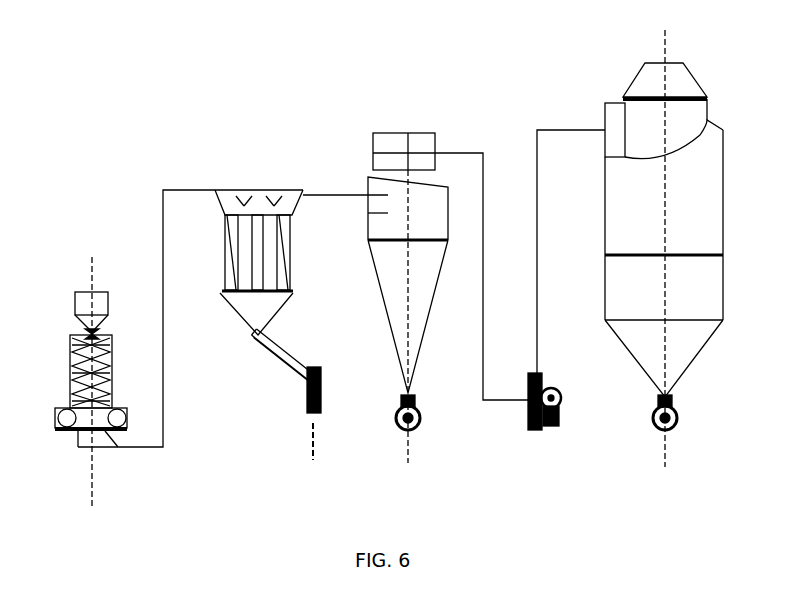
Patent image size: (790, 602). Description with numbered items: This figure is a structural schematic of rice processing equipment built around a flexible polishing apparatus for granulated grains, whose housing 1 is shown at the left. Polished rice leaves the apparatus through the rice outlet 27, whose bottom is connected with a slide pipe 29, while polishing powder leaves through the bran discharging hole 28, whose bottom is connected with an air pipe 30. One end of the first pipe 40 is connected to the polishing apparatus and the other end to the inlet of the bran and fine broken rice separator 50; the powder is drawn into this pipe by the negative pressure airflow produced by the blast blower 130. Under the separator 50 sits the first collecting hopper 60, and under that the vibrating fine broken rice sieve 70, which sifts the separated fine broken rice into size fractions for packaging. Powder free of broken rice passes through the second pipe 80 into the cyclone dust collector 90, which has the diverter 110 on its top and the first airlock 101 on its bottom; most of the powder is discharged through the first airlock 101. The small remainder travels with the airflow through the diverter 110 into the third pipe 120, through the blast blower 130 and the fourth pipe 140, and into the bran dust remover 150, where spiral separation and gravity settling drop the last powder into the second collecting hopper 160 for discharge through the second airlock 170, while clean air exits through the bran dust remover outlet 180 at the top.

The housing 1 is at (75, 338).
The rice outlet 27 is at (78, 390).
The bran discharging hole 28 is at (75, 423).
The air pipe 30 is at (92, 445).
The slide pipe 29 is at (90, 457).
The first pipe 40 is at (160, 267).
The bran and fine broken rice separator 50 is at (220, 190).
The first collecting hopper 60 is at (247, 320).
The vibrating fine broken rice sieve 70 is at (257, 363).
The second pipe 80 is at (337, 195).
The cyclone dust collector 90 is at (368, 183).
The first airlock 101 is at (397, 410).
The diverter 110 is at (435, 133).
The third pipe 120 is at (482, 276).
The blast blower 130 is at (530, 380).
The fourth pipe 140 is at (540, 128).
The bran dust remover 150 is at (617, 143).
The second collecting hopper 160 is at (657, 375).
The second airlock 170 is at (653, 417).
The bran dust remover outlet 180 is at (683, 63).